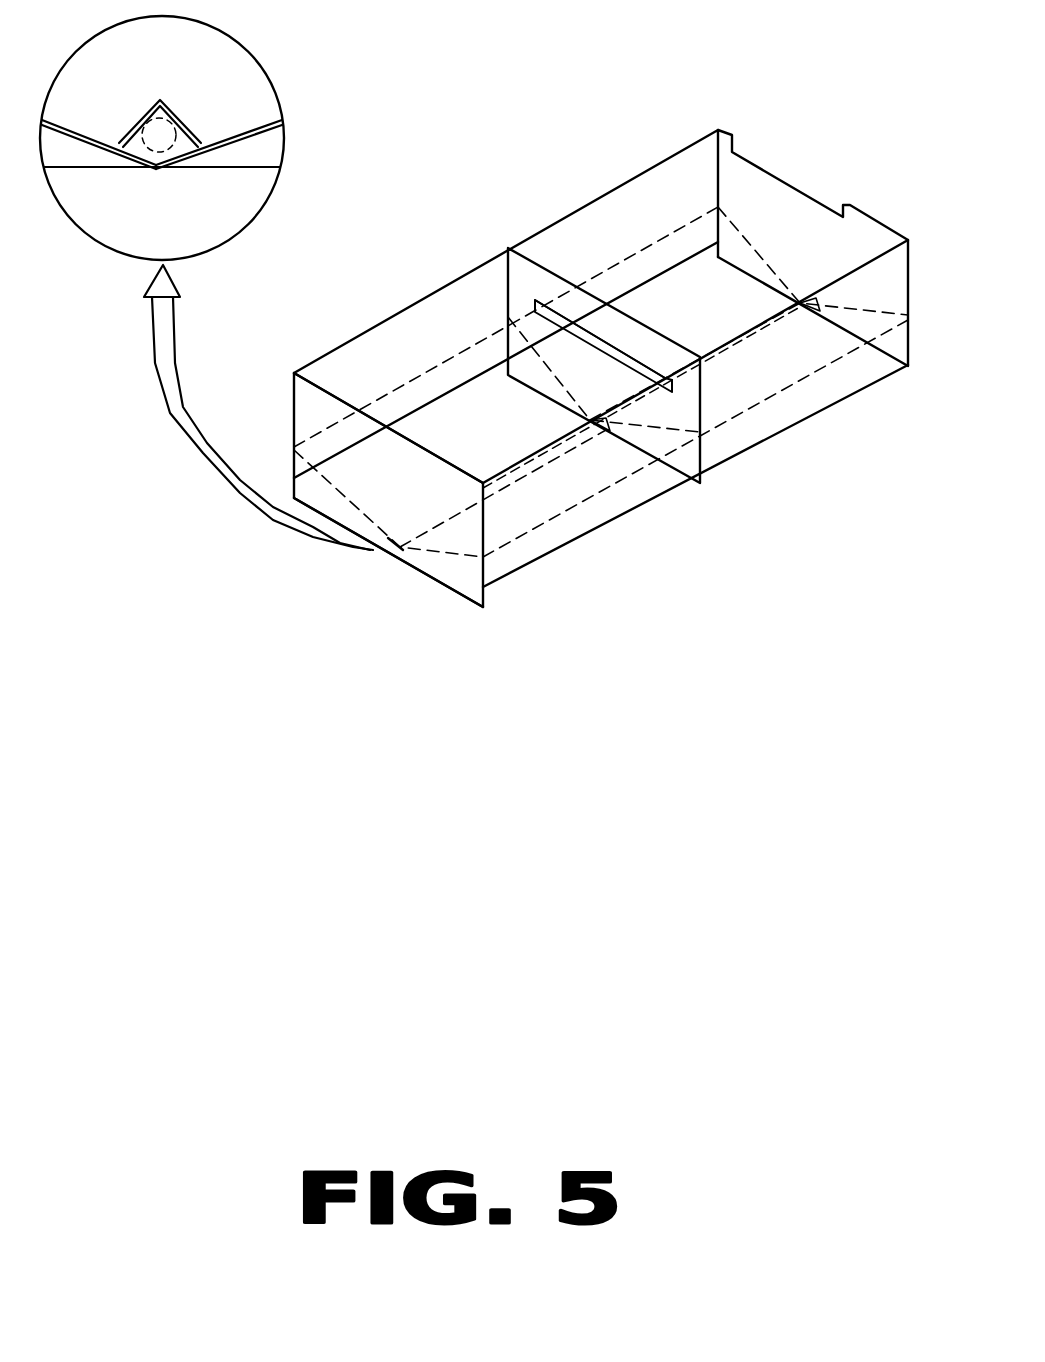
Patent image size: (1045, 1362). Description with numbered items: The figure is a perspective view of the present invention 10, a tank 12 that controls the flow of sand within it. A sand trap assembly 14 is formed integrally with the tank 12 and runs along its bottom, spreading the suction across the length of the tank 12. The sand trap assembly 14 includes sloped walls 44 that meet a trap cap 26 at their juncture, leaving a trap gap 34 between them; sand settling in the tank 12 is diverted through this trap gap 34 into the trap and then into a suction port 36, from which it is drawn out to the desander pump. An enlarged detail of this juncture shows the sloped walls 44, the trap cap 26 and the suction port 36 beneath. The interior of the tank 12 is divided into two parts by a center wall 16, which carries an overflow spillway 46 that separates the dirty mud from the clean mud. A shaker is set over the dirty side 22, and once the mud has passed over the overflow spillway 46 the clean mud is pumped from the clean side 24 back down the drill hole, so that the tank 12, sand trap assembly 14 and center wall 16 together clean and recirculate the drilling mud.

The present invention 10 is at (767, 143).
The tank 12 is at (584, 535).
The sand trap assembly 14 is at (514, 402).
The center wall 16 is at (597, 298).
The dirty side 22 is at (698, 207).
The clean side 24 is at (490, 403).
The trap cap 26 is at (165, 98).
The trap gap 34 is at (405, 553).
The suction port 36 is at (163, 150).
The sloped walls 44 is at (103, 145).
The overflow spillway 46 is at (627, 352).